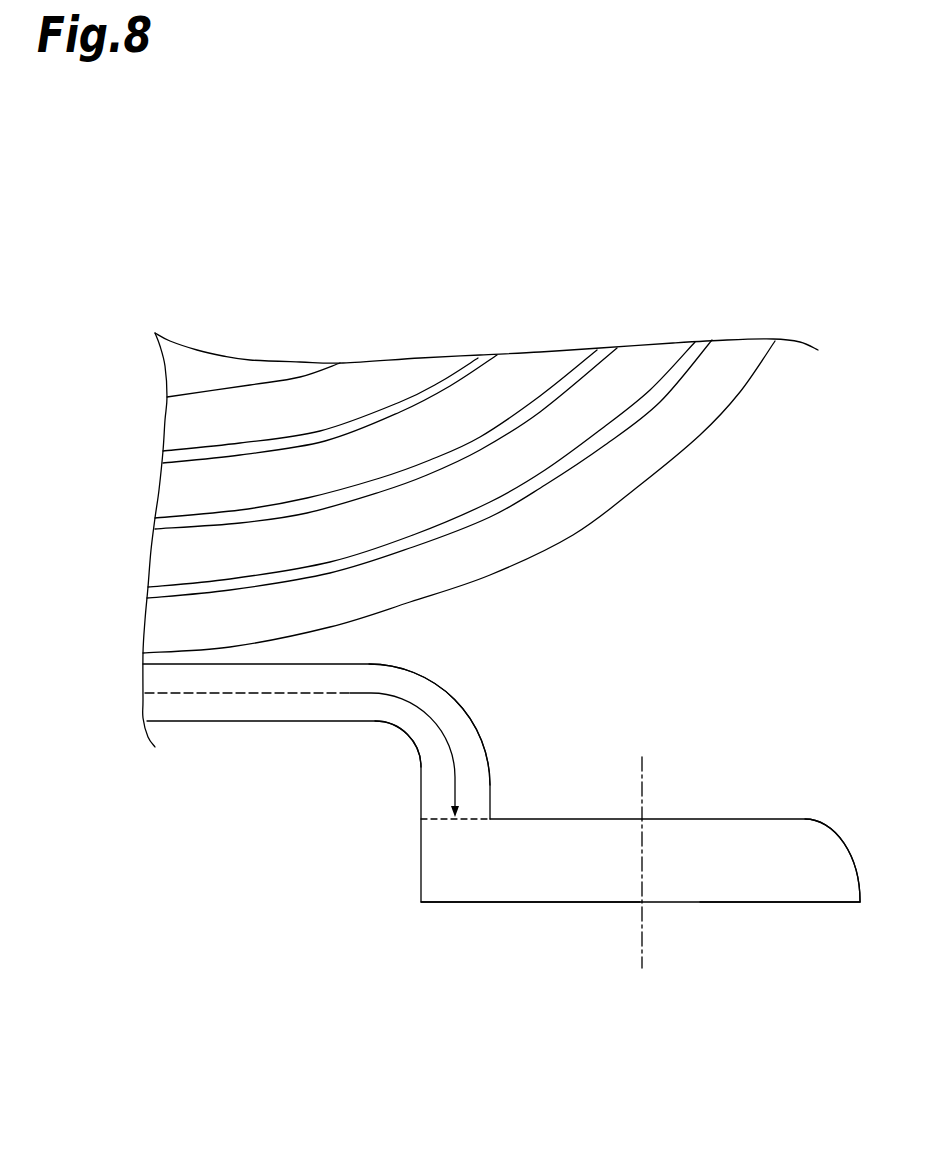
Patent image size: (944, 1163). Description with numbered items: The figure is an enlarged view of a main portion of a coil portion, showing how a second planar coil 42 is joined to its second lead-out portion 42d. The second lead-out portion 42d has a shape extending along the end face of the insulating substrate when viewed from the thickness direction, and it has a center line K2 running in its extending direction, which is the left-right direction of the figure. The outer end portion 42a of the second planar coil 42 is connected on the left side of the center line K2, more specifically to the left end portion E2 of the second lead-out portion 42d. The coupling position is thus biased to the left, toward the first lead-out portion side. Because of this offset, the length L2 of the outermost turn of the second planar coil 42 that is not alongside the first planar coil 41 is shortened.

The first planar coil 41 is at (177, 670).
The second planar coil 42 is at (252, 726).
The outer end portion 42a is at (460, 736).
The second lead-out portion 42d is at (762, 875).
The length of the outermost turn L2 is at (343, 697).
The center line K2 is at (643, 775).
The left end portion E2 is at (468, 880).